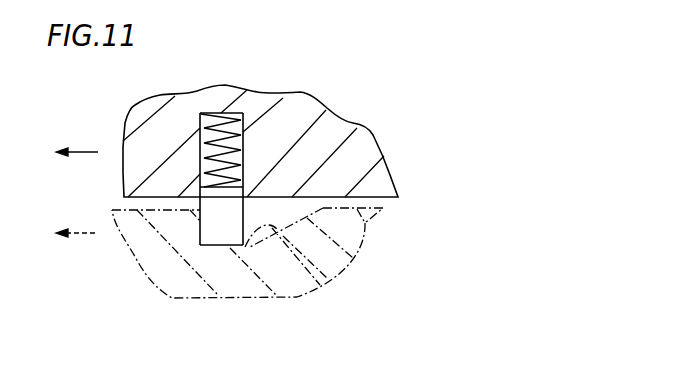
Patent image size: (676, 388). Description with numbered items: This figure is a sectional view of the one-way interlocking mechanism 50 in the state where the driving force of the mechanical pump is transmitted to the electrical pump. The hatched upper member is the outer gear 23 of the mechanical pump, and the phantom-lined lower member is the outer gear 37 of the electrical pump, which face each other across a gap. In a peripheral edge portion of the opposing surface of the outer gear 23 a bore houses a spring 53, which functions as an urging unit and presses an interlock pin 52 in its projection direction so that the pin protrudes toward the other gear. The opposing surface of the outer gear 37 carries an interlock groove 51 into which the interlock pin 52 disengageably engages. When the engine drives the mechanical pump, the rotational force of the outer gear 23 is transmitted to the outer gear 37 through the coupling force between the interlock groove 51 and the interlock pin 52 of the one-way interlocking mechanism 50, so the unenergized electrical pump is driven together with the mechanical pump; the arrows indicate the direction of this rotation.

The outer gear 23 is at (365, 143).
The spring 53 is at (213, 116).
The one-way interlocking mechanism 50 is at (200, 230).
The interlock pin 52 is at (218, 237).
The interlock groove 51 is at (328, 275).
The outer gear 37 is at (363, 242).